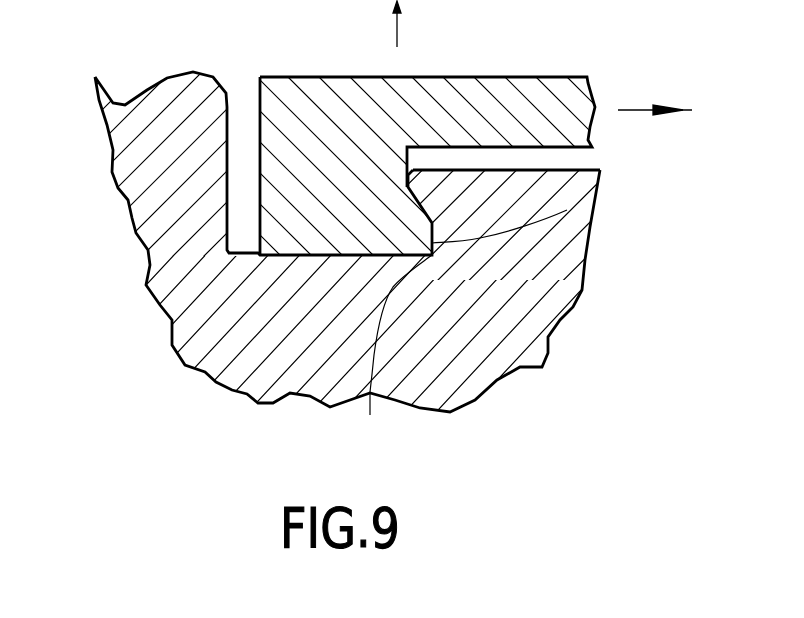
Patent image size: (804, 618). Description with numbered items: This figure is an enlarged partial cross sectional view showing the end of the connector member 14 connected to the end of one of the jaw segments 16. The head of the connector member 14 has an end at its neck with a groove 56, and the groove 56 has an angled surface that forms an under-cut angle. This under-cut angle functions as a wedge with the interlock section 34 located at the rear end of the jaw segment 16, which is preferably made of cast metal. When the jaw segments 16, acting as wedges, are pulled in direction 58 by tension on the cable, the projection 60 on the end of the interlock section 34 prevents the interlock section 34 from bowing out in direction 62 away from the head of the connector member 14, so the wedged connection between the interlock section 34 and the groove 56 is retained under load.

The connector member 14 is at (113, 187).
The jaw segment 16 is at (470, 77).
The interlock section 34 is at (302, 90).
The groove 56 is at (567, 210).
The direction 58 is at (640, 109).
The projection 60 is at (462, 334).
The direction 62 is at (398, 24).